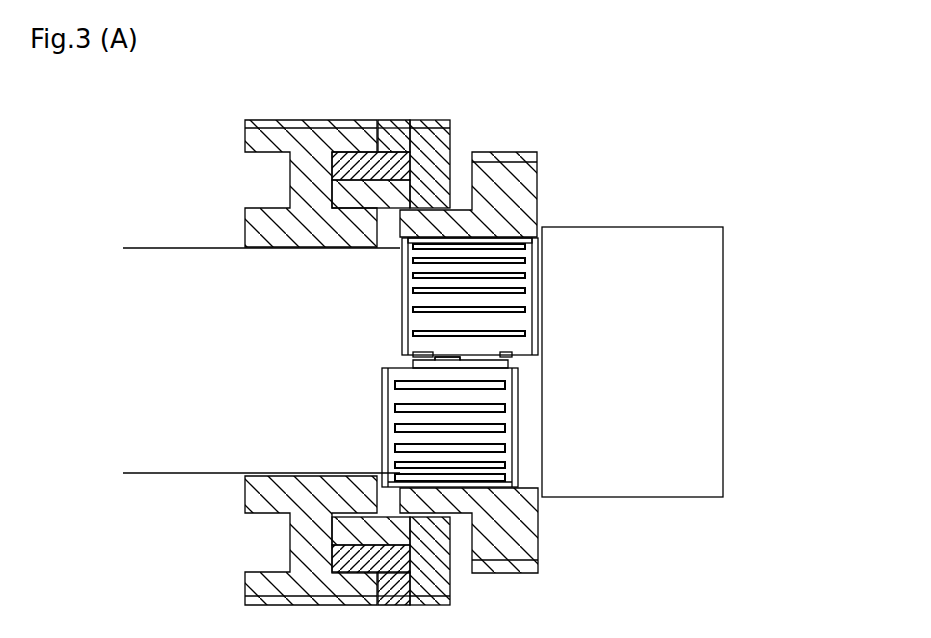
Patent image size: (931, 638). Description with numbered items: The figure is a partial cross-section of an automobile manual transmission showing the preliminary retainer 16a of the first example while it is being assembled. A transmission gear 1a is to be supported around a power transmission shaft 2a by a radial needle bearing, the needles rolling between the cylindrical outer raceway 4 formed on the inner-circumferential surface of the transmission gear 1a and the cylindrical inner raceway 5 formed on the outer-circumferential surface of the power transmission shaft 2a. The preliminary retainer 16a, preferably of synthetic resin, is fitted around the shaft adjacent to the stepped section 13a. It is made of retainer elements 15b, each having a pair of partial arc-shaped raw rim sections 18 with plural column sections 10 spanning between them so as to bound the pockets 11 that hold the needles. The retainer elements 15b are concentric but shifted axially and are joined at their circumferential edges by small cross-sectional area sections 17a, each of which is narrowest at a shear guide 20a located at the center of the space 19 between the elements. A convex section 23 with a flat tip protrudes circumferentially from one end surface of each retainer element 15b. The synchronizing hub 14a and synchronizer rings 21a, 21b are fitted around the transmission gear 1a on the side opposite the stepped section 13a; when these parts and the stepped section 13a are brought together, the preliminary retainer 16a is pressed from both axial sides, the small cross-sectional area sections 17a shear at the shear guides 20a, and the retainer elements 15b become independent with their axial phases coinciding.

The transmission gear 1a is at (500, 173).
The power transmission shaft 2a is at (173, 452).
The cylindrical outer raceway 4 is at (411, 245).
The cylindrical inner raceway 5 is at (387, 247).
The column sections 10 is at (400, 270).
The pockets 11 is at (525, 336).
The stepped section 13a is at (527, 480).
The synchronizing hub 14a is at (260, 488).
The retainer elements 15b is at (390, 253).
The preliminary retainer 16a is at (545, 243).
The small cross-sectional area sections 17a is at (397, 367).
The raw rim sections 18 is at (530, 272).
The space 19 is at (405, 362).
The shear guide 20a is at (406, 366).
The synchronizer ring 21a is at (391, 140).
The synchronizer ring 21b is at (436, 148).
The convex section 23 is at (452, 360).